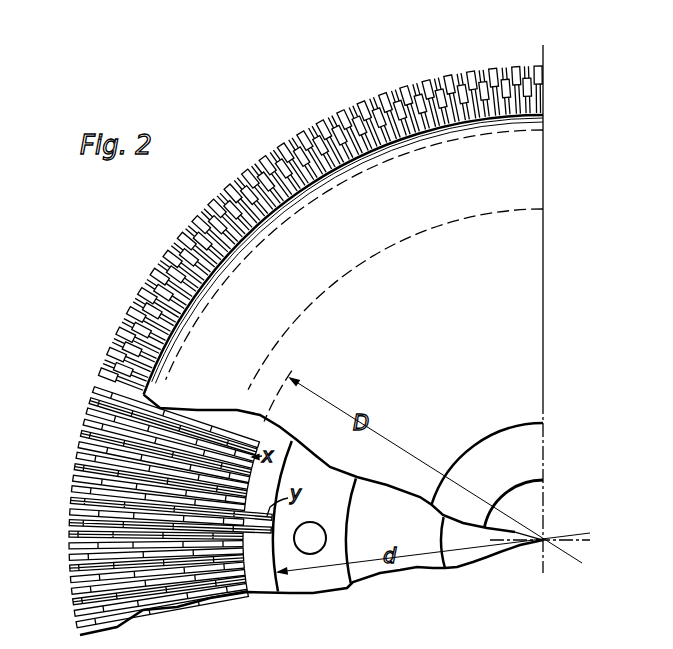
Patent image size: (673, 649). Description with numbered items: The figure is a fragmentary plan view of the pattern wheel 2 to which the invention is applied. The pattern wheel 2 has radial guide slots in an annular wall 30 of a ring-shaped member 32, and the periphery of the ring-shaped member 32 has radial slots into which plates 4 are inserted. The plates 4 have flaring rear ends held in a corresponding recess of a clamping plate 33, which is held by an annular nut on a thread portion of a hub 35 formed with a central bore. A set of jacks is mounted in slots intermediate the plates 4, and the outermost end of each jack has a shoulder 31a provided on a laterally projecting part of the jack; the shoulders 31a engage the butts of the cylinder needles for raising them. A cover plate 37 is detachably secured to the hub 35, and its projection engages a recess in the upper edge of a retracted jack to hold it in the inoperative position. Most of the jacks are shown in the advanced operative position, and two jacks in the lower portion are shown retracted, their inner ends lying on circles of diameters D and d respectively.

The pattern wheel 2 is at (275, 135).
The plates 4 is at (82, 455).
The annular wall 30 is at (181, 422).
The shoulder 31a is at (110, 372).
The ring-shaped member 32 is at (325, 581).
The clamping plate 33 is at (427, 557).
The hub 35 is at (533, 462).
The cover plate 37 is at (446, 322).